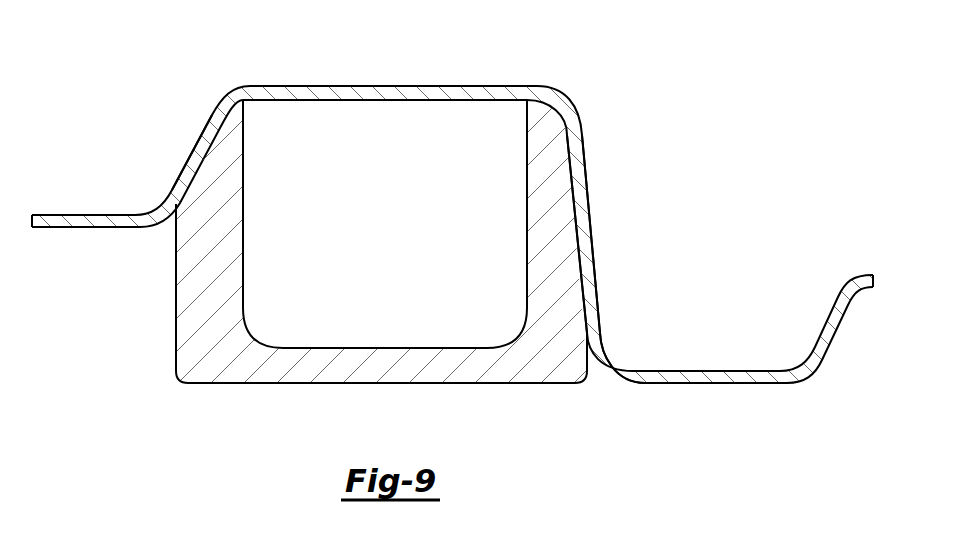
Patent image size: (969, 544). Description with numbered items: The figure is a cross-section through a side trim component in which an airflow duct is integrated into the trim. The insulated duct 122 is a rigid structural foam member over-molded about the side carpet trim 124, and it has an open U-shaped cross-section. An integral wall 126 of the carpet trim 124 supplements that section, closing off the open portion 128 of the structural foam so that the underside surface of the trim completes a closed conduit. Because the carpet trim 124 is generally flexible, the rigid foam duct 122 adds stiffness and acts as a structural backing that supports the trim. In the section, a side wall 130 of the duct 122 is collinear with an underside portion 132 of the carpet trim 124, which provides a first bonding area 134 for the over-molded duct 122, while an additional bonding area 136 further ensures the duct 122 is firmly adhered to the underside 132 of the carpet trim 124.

The insulated duct 122 is at (176, 339).
The side carpet trim 124 is at (740, 384).
The integral wall 126 is at (585, 185).
The open portion 128 is at (405, 131).
The side wall 130 is at (537, 210).
The underside portion 132 is at (614, 392).
The first bonding area 134 is at (583, 268).
The additional bonding area 136 is at (191, 158).